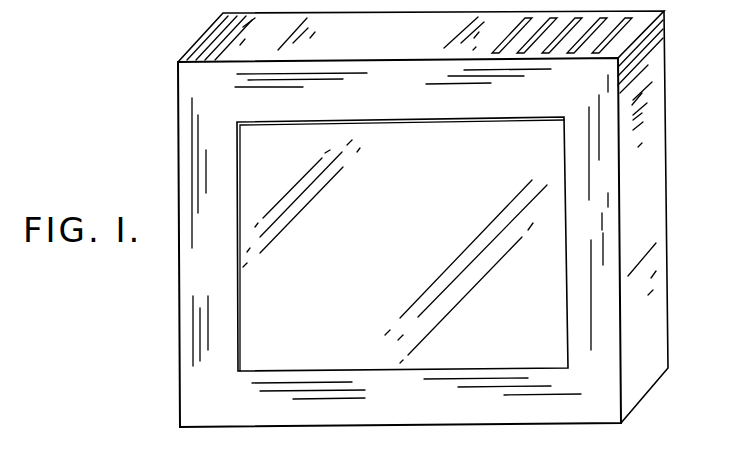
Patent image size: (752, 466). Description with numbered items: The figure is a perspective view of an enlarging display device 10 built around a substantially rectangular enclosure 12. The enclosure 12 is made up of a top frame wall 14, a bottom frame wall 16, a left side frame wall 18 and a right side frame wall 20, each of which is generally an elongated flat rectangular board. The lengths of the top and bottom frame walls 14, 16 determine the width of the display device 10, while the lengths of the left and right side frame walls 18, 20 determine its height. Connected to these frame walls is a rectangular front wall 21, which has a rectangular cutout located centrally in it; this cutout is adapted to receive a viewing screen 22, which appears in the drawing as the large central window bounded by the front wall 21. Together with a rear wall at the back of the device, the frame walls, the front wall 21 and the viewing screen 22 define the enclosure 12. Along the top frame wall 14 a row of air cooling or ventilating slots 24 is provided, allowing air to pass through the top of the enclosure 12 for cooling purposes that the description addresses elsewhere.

The enlarging display device 10 is at (116, 154).
The rectangular enclosure 12 is at (177, 62).
The top frame wall 14 is at (230, 37).
The bottom frame wall 16 is at (533, 410).
The left side frame wall 18 is at (195, 285).
The right side frame wall 20 is at (648, 202).
The rectangular front wall 21 is at (606, 150).
The viewing screen 22 is at (526, 299).
The ventilating slots 24 is at (618, 33).